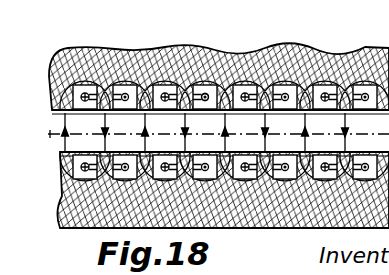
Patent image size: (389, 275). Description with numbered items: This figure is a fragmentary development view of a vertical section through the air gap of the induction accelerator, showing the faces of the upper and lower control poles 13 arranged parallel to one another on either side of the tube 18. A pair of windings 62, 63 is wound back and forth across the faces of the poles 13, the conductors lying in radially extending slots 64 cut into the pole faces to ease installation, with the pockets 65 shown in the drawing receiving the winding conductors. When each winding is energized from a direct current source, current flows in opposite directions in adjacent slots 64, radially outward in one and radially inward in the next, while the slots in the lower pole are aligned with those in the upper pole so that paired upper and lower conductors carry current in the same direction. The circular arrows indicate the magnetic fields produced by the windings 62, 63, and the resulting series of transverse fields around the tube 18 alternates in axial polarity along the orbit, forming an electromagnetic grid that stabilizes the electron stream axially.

The control pole 13 is at (83, 50).
The tube 18 is at (54, 110).
The winding 62 is at (204, 93).
The winding 63 is at (82, 224).
The radially extending slot 64 is at (80, 161).
The pocket 65 is at (76, 97).